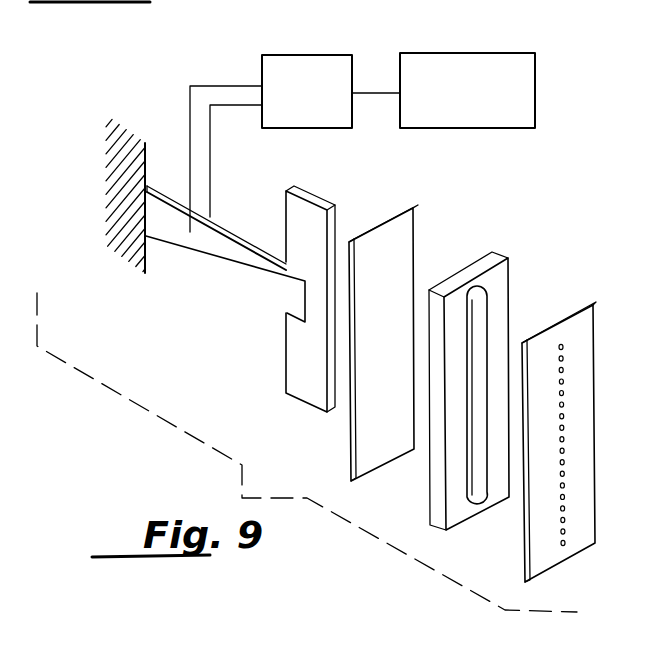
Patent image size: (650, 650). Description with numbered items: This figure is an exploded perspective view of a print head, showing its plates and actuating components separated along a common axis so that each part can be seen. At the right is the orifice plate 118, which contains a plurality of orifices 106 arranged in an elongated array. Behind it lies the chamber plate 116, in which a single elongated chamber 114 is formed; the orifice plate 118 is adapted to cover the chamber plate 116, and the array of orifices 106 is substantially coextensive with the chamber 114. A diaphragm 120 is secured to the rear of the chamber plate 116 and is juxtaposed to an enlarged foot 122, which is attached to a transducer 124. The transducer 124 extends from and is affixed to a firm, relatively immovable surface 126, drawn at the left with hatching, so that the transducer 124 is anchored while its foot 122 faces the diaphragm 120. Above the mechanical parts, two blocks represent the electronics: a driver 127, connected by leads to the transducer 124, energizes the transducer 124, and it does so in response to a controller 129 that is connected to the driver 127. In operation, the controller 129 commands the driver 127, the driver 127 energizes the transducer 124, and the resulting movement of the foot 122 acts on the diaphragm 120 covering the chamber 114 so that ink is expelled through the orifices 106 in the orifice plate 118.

The orifices 106 is at (562, 487).
The chamber 114 is at (480, 312).
The chamber plate 116 is at (468, 270).
The orifice plate 118 is at (577, 328).
The diaphragm 120 is at (400, 248).
The enlarged foot 122 is at (300, 347).
The transducer 124 is at (233, 267).
The immovable surface 126 is at (132, 165).
The driver 127 is at (293, 65).
The controller 129 is at (445, 63).